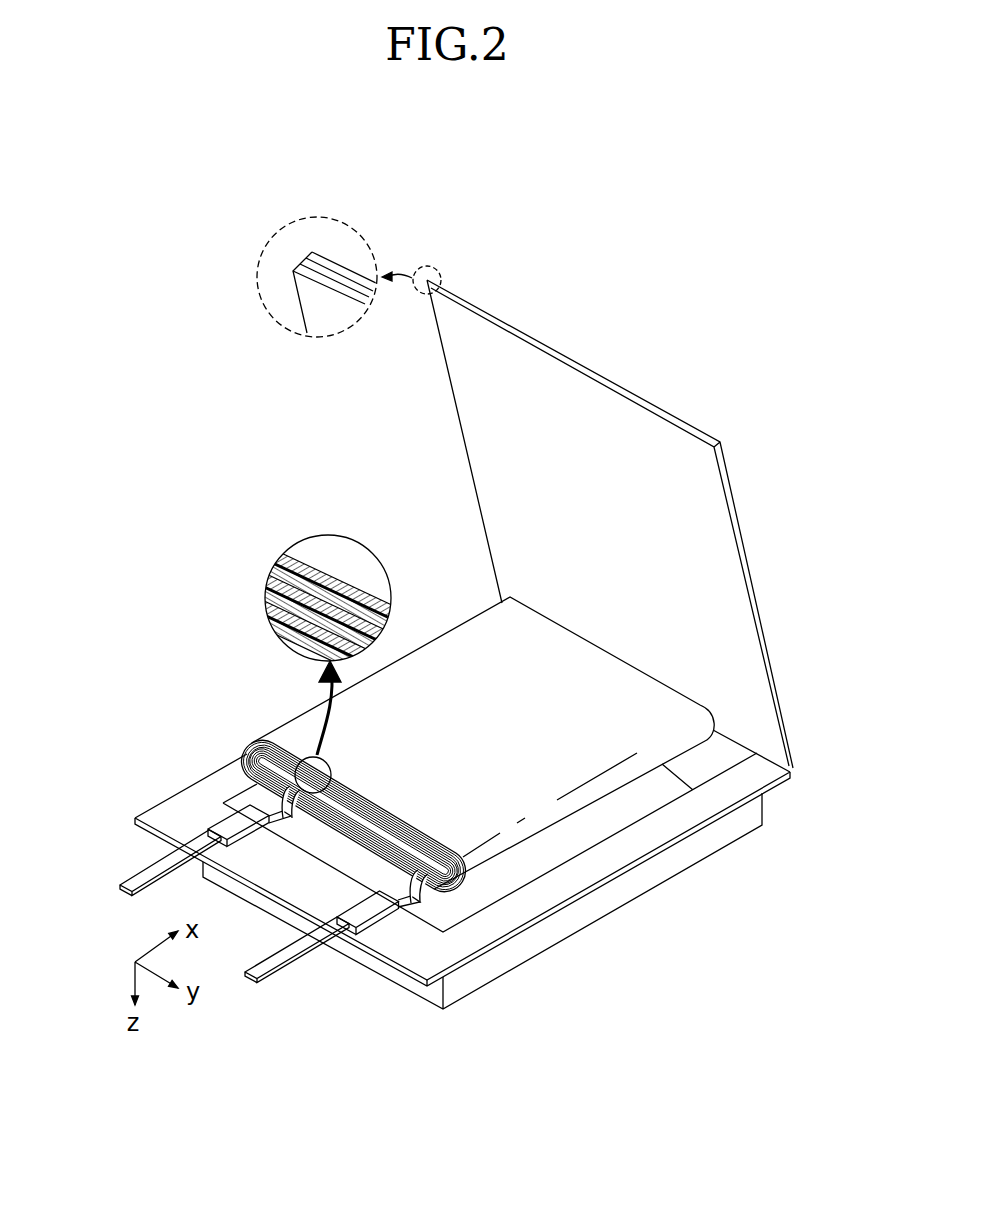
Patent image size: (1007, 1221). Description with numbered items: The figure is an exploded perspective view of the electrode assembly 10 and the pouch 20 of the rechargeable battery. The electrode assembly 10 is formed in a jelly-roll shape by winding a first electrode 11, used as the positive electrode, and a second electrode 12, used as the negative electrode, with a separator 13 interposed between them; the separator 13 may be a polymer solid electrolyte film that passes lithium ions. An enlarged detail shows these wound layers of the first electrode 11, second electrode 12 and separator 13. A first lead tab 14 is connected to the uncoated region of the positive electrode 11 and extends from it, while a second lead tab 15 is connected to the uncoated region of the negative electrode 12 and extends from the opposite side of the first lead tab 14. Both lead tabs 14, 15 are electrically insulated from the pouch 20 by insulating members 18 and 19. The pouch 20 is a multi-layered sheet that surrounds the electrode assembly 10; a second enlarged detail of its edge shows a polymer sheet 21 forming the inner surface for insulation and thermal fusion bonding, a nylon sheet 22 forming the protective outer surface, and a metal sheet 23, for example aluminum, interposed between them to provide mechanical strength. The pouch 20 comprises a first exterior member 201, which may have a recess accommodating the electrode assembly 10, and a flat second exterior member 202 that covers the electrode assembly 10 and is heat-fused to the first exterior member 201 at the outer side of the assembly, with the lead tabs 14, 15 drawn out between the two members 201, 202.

The electrode assembly 10 is at (590, 624).
The first electrode 11 is at (268, 588).
The second electrode 12 is at (280, 568).
The separator 13 is at (380, 603).
The first lead tab 14 is at (146, 878).
The second lead tab 15 is at (277, 962).
The insulating member 18 is at (226, 827).
The insulating member 19 is at (368, 917).
The pouch 20 is at (326, 234).
The polymer sheet 21 is at (311, 276).
The nylon sheet 22 is at (348, 275).
The metal sheet 23 is at (330, 273).
The first exterior member 201 is at (568, 903).
The second exterior member 202 is at (464, 445).